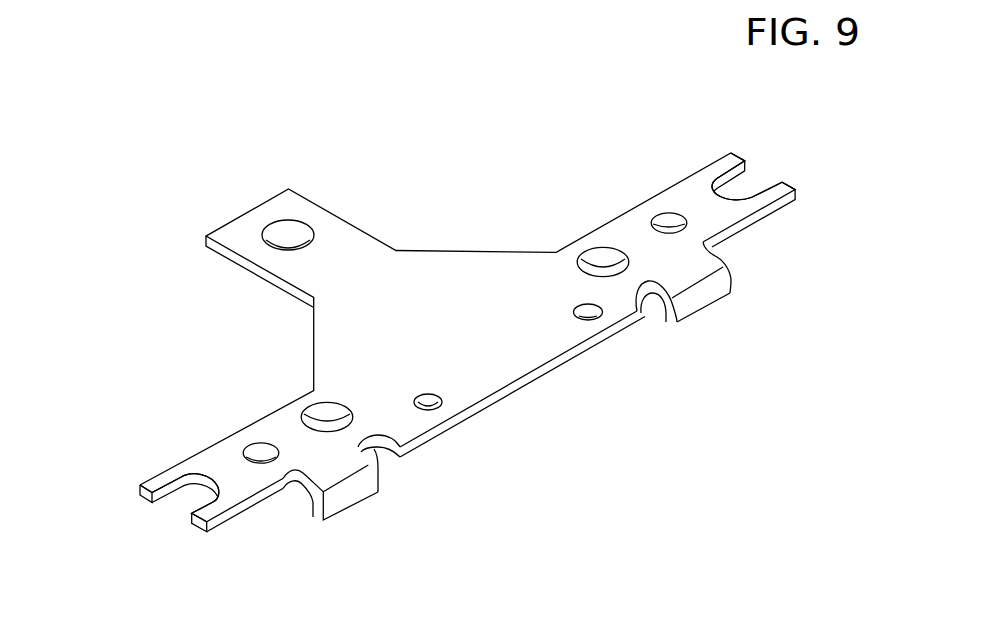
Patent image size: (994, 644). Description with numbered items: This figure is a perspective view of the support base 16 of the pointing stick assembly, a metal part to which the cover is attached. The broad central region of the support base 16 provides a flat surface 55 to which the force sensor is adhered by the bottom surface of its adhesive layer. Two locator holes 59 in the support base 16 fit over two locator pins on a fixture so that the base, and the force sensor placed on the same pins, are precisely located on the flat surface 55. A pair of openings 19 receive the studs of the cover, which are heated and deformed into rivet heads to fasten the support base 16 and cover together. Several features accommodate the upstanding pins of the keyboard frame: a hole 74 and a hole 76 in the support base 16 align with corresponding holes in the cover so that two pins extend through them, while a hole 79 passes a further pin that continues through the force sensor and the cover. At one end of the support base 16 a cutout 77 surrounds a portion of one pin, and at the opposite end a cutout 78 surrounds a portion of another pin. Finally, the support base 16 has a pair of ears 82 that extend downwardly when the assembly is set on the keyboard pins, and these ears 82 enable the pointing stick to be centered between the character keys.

The flat surface 55 is at (442, 335).
The support base 16 is at (576, 360).
The openings 19 is at (670, 225).
The locator holes 59 is at (600, 303).
The hole 74 is at (603, 258).
The hole 76 is at (312, 412).
The hole 79 is at (290, 247).
The cutout 77 is at (745, 173).
The cutout 78 is at (179, 507).
The ears 82 is at (710, 303).